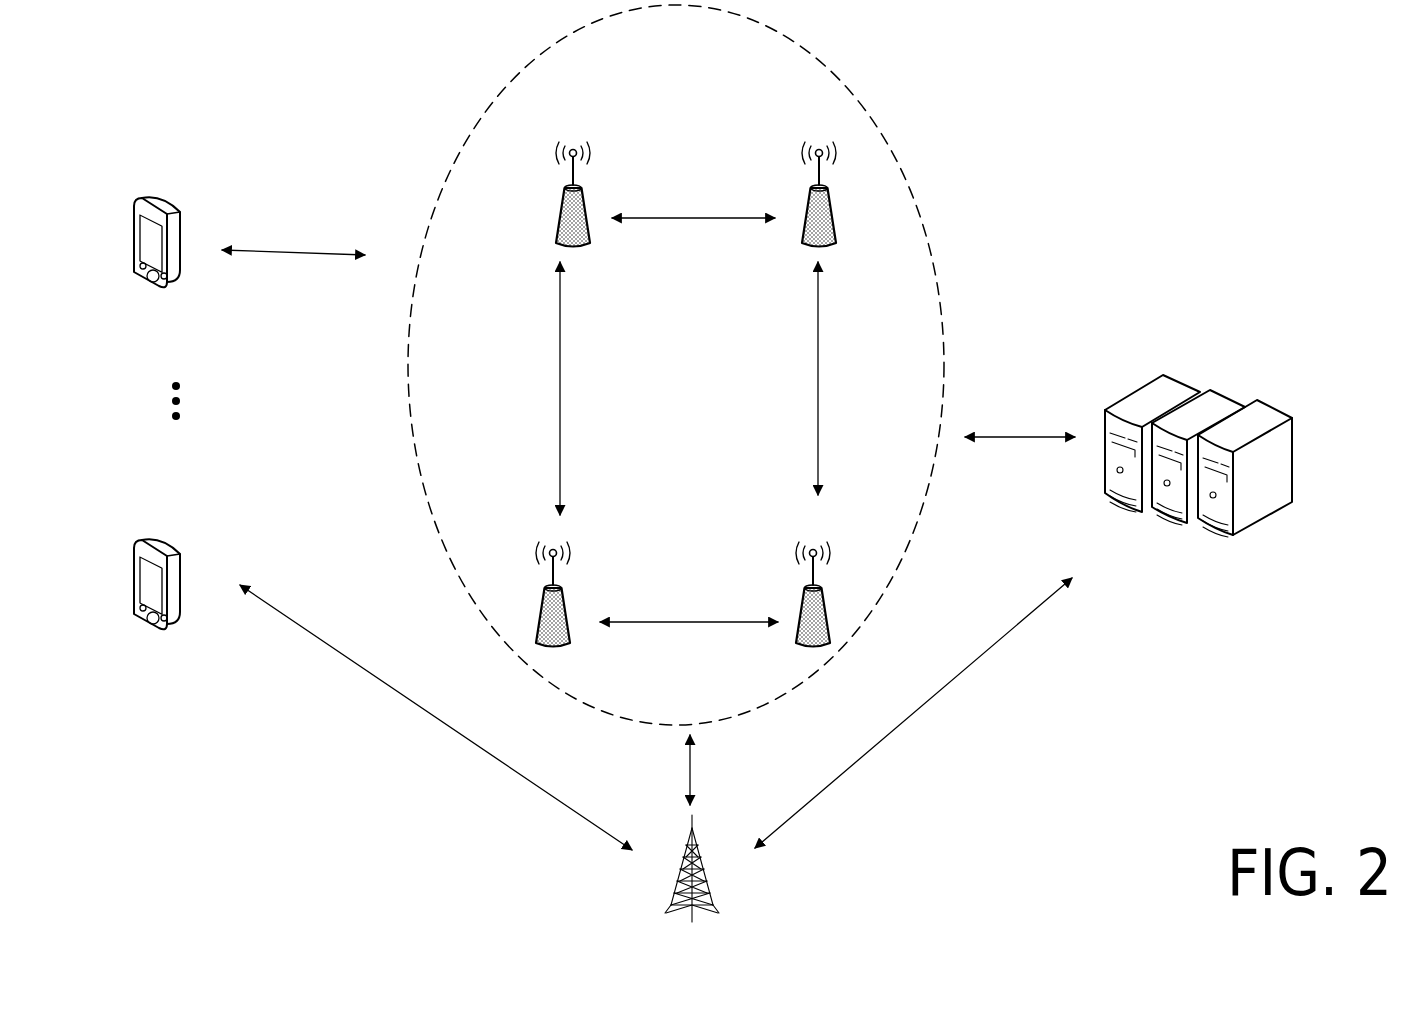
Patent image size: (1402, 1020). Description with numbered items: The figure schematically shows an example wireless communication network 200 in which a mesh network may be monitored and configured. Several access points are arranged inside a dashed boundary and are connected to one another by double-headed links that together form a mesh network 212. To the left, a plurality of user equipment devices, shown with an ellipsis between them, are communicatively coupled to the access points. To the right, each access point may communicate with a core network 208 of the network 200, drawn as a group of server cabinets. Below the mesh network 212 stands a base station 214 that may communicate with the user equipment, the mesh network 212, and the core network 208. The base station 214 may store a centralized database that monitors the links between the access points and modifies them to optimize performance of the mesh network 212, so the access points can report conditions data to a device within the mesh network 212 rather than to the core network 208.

The wireless communication network 200 is at (192, 100).
The core network 208 is at (1226, 395).
The mesh network 212 is at (486, 108).
The base station 214 is at (702, 843).